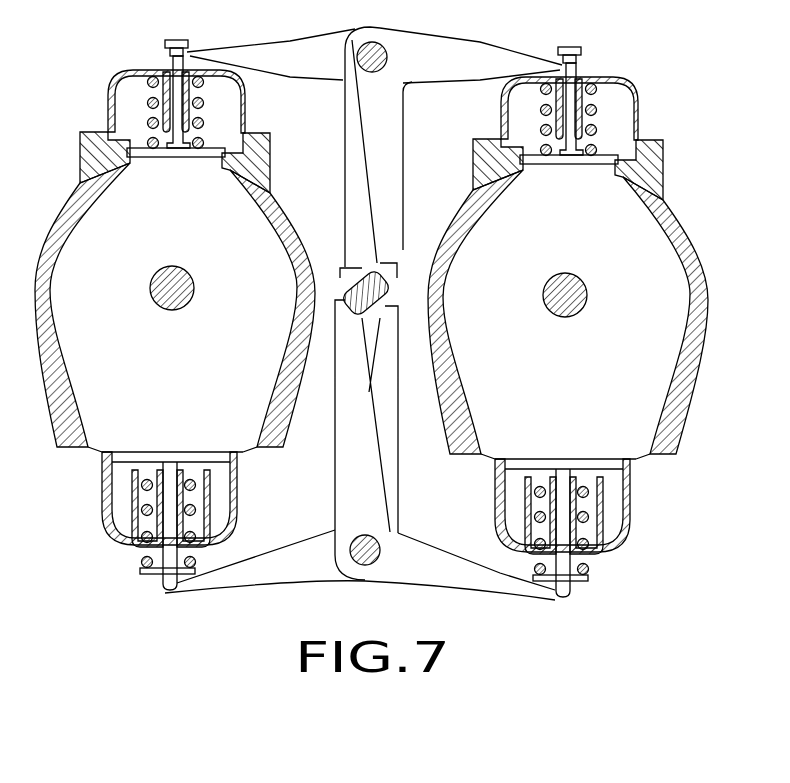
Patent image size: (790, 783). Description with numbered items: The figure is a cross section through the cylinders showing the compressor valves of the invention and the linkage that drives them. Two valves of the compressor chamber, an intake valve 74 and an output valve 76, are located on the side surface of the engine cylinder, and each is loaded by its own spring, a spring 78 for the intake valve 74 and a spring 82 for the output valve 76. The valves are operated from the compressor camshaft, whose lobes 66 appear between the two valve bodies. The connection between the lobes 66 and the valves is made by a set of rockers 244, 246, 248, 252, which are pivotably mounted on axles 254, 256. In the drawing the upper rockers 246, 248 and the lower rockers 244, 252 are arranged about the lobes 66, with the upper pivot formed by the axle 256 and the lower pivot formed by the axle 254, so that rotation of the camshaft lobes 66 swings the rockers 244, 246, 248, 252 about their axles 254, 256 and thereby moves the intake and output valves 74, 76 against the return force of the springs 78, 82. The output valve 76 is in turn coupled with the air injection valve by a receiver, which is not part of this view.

The lobes 66 is at (330, 298).
The intake valve 74 is at (180, 457).
The output valve 76 is at (192, 157).
The spring 78 is at (142, 563).
The spring 82 is at (150, 105).
The rocker 244 is at (287, 563).
The rocker 246 is at (313, 62).
The rocker 248 is at (380, 133).
The rocker 252 is at (352, 500).
The axle 254 is at (378, 552).
The axle 256 is at (393, 66).